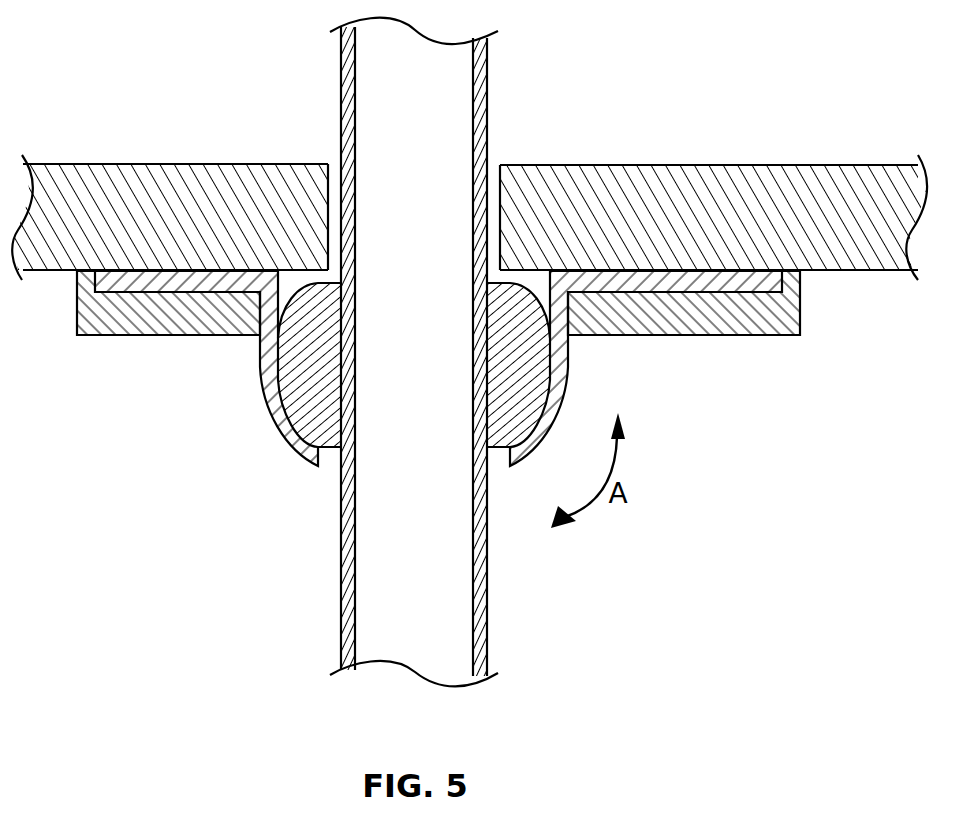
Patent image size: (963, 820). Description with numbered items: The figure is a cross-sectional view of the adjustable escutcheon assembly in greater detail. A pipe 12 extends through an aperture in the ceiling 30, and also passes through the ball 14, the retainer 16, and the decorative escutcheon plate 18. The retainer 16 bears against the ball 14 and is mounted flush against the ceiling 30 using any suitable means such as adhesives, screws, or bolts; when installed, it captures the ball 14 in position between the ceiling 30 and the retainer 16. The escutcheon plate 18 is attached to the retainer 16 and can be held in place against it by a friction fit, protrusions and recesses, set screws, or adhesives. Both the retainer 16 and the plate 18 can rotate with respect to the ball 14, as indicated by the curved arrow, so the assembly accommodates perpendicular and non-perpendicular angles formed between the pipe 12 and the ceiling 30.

The pipe 12 is at (487, 84).
The ball 14 is at (328, 415).
The retainer 16 is at (198, 285).
The decorative escutcheon plate 18 is at (122, 333).
The ceiling 30 is at (176, 164).